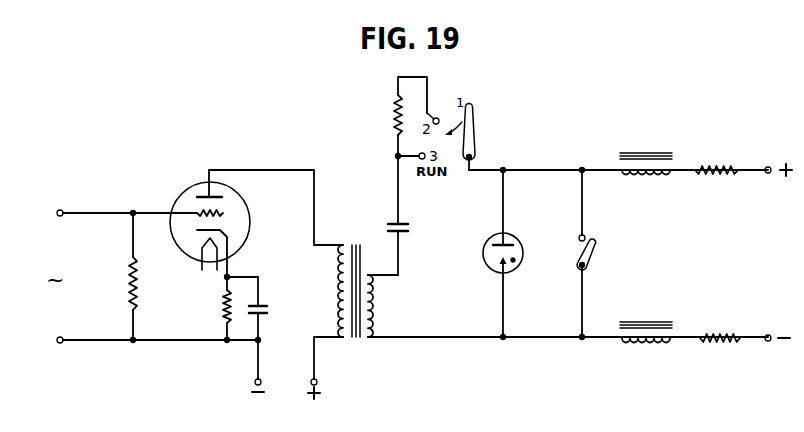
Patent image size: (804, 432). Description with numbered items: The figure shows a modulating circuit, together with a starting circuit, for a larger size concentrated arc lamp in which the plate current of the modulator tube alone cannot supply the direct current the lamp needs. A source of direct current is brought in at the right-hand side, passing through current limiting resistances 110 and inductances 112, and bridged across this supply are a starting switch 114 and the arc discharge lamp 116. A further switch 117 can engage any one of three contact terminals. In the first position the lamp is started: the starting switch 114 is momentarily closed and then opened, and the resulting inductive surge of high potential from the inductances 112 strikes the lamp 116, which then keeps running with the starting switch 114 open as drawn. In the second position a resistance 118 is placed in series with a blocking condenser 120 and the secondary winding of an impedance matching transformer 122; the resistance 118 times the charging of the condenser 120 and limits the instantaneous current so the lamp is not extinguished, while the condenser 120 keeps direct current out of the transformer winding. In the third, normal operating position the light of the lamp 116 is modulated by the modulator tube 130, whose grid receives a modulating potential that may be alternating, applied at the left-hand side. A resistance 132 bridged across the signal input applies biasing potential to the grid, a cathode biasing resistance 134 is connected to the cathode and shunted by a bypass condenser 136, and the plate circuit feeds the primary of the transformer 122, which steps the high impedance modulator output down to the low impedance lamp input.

The current limiting resistances 110 is at (725, 175).
The inductances 112 is at (657, 175).
The starting switch 114 is at (596, 253).
The arc discharge lamp 116 is at (485, 240).
The switch 117 is at (474, 133).
The resistance 118 is at (395, 120).
The blocking condenser 120 is at (391, 228).
The impedance matching transformer 122 is at (376, 311).
The modulator tube 130 is at (193, 188).
The resistance 132 is at (131, 280).
The cathode biasing resistance 134 is at (224, 308).
The bypass condenser 136 is at (266, 310).